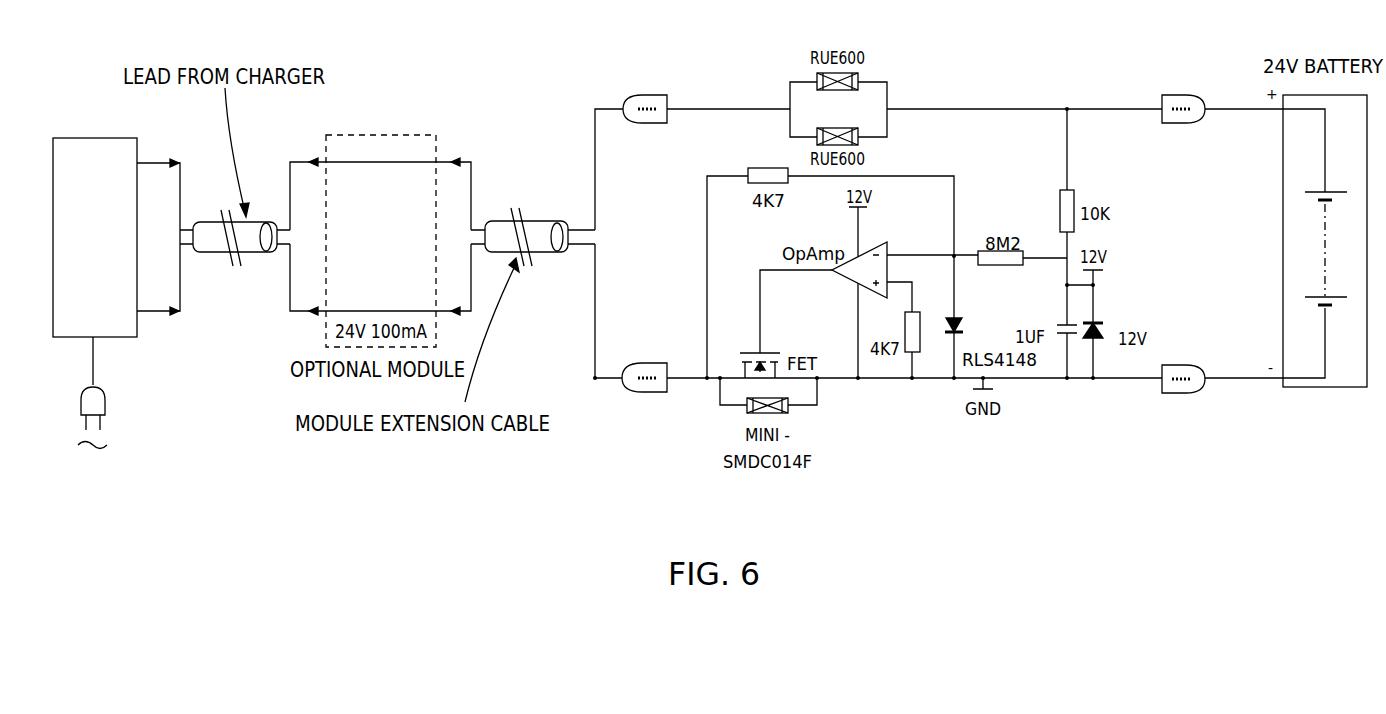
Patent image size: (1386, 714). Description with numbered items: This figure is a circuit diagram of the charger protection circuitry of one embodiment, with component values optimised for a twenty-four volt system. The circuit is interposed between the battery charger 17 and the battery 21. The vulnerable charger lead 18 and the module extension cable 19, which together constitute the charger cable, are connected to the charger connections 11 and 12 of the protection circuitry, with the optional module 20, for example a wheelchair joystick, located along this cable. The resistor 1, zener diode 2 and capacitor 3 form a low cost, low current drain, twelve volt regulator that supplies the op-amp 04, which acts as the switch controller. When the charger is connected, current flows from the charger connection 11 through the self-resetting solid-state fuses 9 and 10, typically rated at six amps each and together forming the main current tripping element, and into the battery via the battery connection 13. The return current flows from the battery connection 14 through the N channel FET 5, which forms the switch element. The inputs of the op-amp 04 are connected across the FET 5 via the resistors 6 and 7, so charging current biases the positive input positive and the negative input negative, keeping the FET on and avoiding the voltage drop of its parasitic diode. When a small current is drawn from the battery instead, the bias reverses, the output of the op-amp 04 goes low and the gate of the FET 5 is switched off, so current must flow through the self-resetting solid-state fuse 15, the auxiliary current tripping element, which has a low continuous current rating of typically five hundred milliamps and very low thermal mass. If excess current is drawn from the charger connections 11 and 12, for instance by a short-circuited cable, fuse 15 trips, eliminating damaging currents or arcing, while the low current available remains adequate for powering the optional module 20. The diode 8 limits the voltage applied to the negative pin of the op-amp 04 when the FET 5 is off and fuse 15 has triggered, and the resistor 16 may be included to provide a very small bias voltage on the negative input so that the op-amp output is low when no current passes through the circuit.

The resistor 1 is at (1058, 196).
The zener diode 2 is at (1105, 322).
The capacitor 3 is at (1060, 322).
The op-amp 04 is at (870, 250).
The N channel FET 5 is at (752, 352).
The resistor 6 is at (762, 168).
The resistor 7 is at (905, 325).
The diode 8 is at (948, 322).
The self-resetting solid-state fuse 9 is at (860, 82).
The self-resetting solid-state fuse 10 is at (858, 140).
The charger connection 11 is at (655, 95).
The charger connection 12 is at (645, 394).
The battery connection 13 is at (1182, 95).
The battery connection 14 is at (1178, 394).
The self-resetting solid-state fuse 15 is at (788, 408).
The resistor 16 is at (1010, 270).
The battery charger 17 is at (95, 138).
The charger lead 18 is at (203, 254).
The module extension cable 19 is at (543, 254).
The optional module 20 is at (387, 230).
The battery 21 is at (1297, 247).